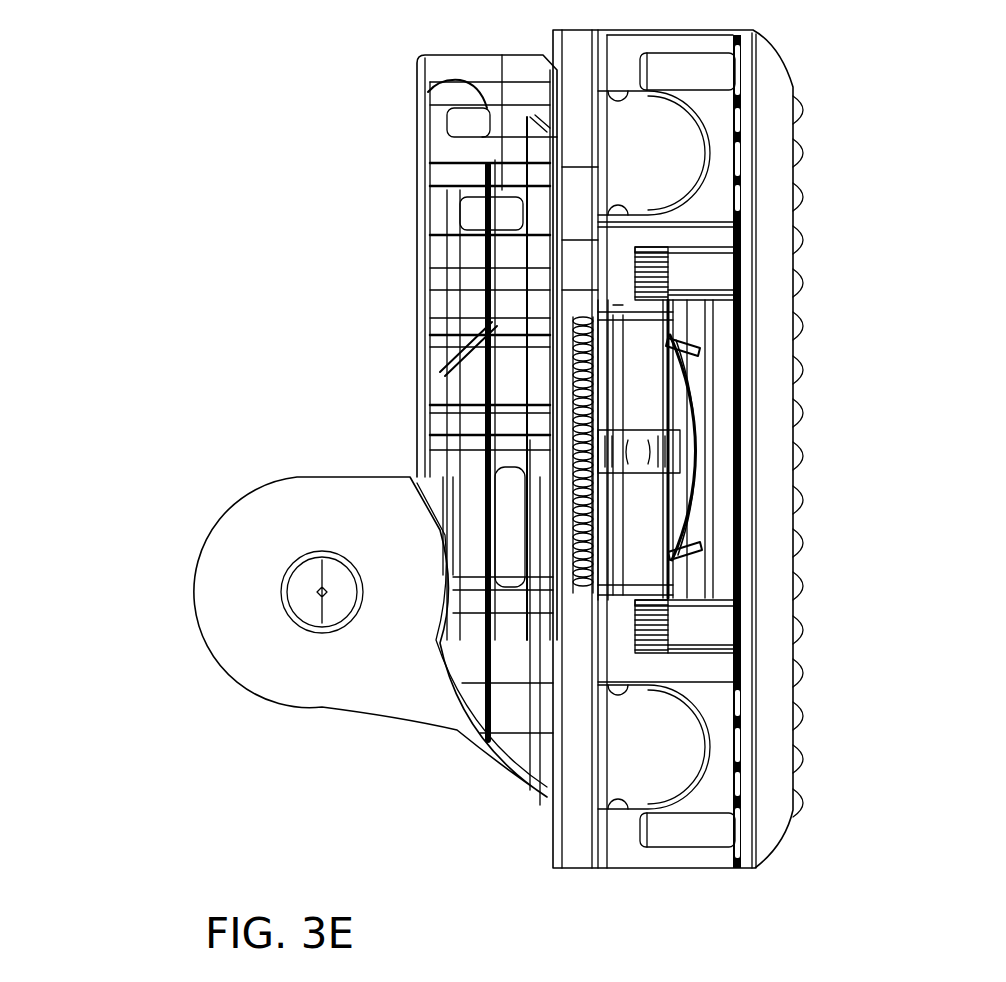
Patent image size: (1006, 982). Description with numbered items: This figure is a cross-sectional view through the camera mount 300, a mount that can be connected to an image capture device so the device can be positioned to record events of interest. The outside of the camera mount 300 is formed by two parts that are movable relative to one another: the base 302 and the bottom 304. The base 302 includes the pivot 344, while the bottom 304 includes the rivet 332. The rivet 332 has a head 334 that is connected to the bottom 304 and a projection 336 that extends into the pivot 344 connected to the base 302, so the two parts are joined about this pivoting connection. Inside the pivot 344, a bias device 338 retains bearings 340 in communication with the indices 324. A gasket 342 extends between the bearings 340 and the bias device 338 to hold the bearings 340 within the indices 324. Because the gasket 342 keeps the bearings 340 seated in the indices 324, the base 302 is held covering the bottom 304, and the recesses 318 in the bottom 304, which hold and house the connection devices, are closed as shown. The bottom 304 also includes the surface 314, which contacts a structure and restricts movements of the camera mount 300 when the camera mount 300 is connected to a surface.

The camera mount 300 is at (203, 199).
The base 302 is at (415, 357).
The bottom 304 is at (717, 795).
The surface 314 is at (777, 121).
The recesses 318 is at (612, 776).
The indices 324 is at (438, 655).
The rivet 332 is at (556, 298).
The head 334 is at (707, 320).
The projection 336 is at (712, 410).
The bias device 338 is at (640, 447).
The bearings 340 is at (700, 350).
The gasket 342 is at (712, 495).
The pivot 344 is at (715, 565).